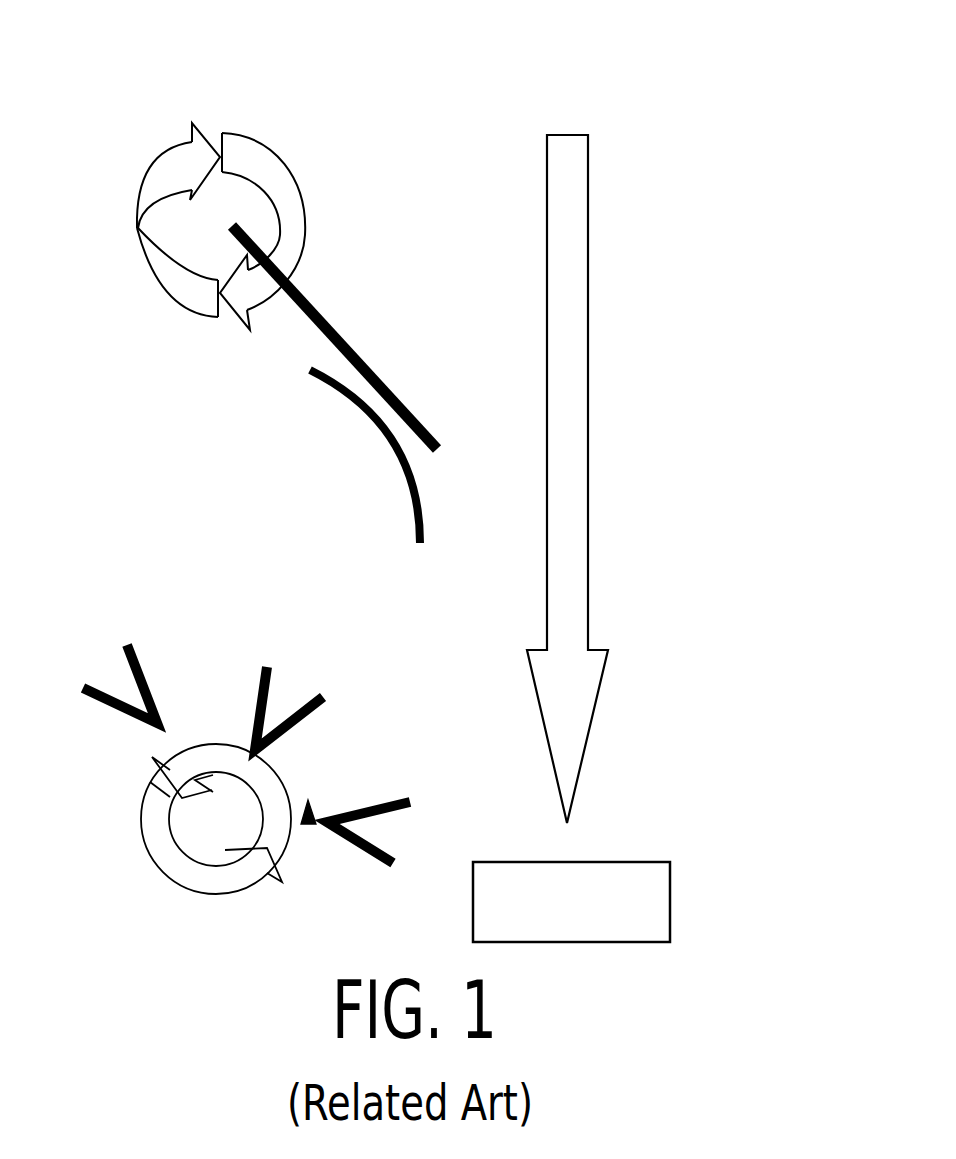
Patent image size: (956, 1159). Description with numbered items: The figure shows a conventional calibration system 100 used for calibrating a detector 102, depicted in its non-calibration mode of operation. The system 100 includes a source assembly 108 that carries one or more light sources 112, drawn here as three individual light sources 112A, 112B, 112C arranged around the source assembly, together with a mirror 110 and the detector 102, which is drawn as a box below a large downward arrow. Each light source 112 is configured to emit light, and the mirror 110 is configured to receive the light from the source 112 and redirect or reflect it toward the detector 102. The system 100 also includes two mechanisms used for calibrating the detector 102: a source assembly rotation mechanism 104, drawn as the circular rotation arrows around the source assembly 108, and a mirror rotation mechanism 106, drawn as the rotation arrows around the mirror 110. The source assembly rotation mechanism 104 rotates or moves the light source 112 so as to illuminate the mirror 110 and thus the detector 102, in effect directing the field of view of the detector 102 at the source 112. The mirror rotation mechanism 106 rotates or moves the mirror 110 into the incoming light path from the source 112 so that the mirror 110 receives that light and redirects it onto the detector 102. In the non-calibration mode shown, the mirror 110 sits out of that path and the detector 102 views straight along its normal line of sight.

The calibration system 100 is at (724, 92).
The detector 102 is at (672, 900).
The source assembly rotation mechanism 104 is at (227, 895).
The mirror rotation mechanism 106 is at (317, 313).
The source assembly 108 is at (309, 825).
The mirror 110 is at (423, 508).
The light source 112 is at (286, 712).
The light source 112A is at (105, 690).
The light source 112B is at (293, 705).
The light source 112C is at (380, 847).